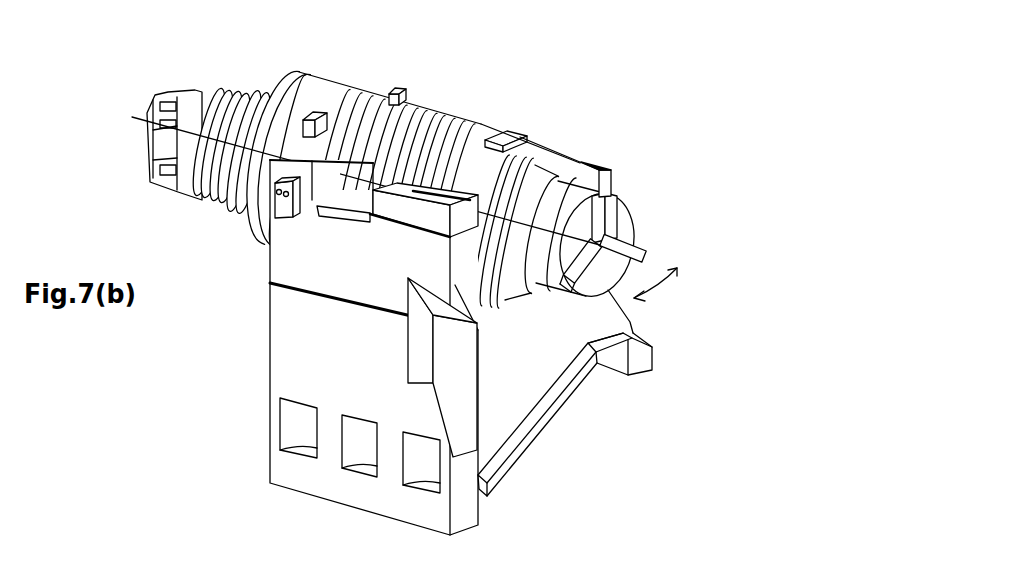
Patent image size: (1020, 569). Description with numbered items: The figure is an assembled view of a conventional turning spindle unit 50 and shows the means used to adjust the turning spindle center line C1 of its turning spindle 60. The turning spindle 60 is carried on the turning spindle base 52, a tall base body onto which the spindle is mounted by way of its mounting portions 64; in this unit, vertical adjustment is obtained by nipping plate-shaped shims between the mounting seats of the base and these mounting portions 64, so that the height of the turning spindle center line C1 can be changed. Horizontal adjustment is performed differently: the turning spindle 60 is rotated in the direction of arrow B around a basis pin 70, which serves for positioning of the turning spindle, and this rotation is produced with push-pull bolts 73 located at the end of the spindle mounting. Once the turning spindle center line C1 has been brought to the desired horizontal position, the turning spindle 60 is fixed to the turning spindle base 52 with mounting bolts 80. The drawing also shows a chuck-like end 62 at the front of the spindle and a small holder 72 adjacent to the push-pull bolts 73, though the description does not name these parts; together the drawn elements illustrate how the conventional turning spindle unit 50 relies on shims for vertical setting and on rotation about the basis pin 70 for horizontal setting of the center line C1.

The turning spindle unit 50 is at (694, 148).
The turning spindle base 52 is at (312, 362).
The turning spindle 60 is at (338, 152).
The chuck 62 is at (627, 228).
The mounting portions 64 is at (397, 210).
The basis pin 70 is at (590, 163).
The sensor holder 72 is at (274, 220).
The push-pull bolts 73 is at (279, 195).
The mounting bolts 80 is at (593, 166).
The turning spindle center line C1 is at (607, 181).
The arrow B is at (665, 293).